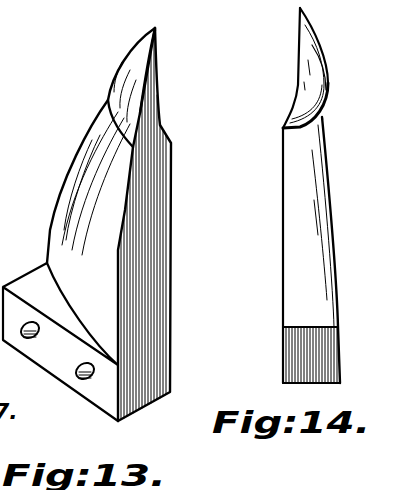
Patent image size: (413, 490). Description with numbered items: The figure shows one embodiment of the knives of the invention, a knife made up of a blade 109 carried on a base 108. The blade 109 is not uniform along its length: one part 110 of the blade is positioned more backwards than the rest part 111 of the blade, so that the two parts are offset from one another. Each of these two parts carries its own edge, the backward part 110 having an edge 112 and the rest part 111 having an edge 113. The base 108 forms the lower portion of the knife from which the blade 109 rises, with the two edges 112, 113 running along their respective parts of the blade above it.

In FIG. 13, the base 108 is at (57, 358).
In FIG. 14, the base 108 is at (305, 357).
In FIG. 13, the blade 109 is at (177, 217).
In FIG. 14, the blade 109 is at (335, 179).
In FIG. 13, the part of the blade 110 is at (145, 97).
In FIG. 14, the part of the blade 110 is at (311, 82).
In FIG. 13, the rest part of the blade 111 is at (160, 280).
In FIG. 14, the rest part of the blade 111 is at (320, 255).
In FIG. 13, the edge 112 is at (122, 58).
In FIG. 14, the edge 112 is at (298, 53).
In FIG. 13, the edge 113 is at (62, 160).
In FIG. 14, the edge 113 is at (282, 226).